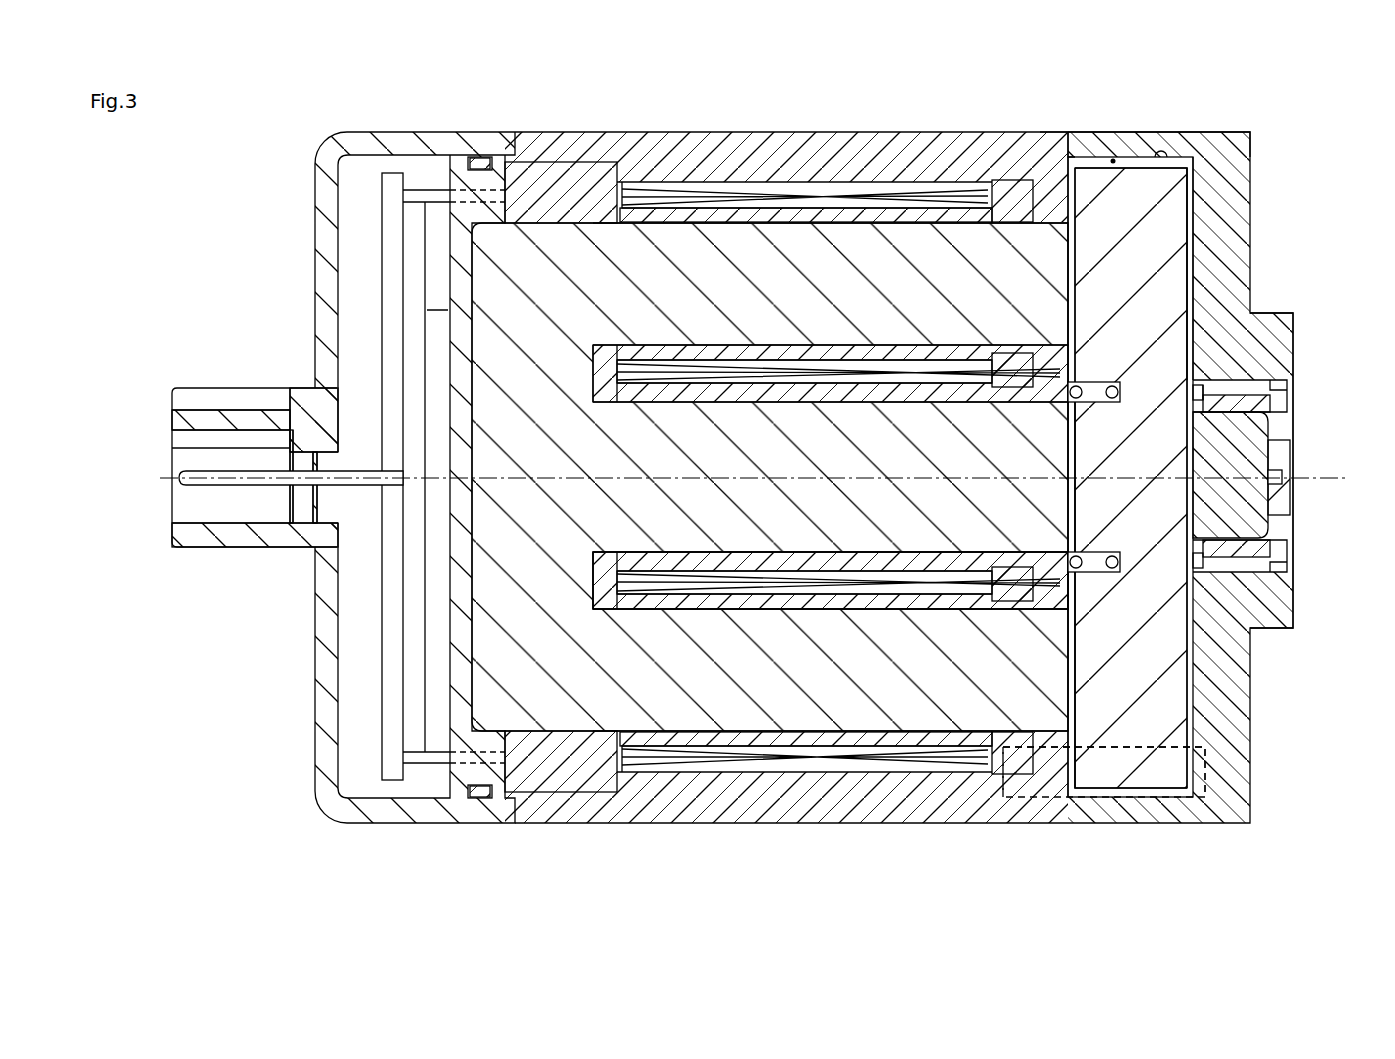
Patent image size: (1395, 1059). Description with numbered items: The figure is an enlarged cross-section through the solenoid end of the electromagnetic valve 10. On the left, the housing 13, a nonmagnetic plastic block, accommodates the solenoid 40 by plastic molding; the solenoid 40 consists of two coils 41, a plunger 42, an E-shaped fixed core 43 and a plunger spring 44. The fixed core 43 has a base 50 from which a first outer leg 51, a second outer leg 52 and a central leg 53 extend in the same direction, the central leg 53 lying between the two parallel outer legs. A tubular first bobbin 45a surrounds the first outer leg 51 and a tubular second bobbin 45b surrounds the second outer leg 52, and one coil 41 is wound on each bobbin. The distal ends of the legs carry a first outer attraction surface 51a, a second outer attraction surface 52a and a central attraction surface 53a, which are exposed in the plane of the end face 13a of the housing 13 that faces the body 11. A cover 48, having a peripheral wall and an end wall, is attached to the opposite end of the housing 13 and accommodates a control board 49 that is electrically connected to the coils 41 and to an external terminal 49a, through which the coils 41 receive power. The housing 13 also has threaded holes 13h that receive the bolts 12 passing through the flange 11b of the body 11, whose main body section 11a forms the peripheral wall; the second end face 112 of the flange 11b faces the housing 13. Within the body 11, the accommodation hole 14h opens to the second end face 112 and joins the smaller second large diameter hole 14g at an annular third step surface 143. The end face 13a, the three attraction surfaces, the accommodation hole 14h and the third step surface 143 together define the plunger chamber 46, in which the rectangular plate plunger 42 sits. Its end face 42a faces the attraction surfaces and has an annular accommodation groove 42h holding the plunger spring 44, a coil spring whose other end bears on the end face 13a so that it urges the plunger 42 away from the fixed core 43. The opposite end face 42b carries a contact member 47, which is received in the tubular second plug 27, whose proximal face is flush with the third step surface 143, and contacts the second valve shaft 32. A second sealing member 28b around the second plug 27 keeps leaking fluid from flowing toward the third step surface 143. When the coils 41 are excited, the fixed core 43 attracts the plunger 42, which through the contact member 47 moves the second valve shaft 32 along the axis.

The electromagnetic valve 10 is at (1304, 110).
The body 11 is at (1125, 152).
The main body section 11a is at (1270, 311).
The flange 11b is at (1215, 145).
The bolts 12 is at (1235, 715).
The housing 13 is at (833, 150).
The end face 13a is at (1085, 157).
The threaded holes 13h is at (1030, 797).
The second large diameter hole 14g is at (1215, 385).
The accommodation hole 14h is at (1162, 156).
The second plug 27 is at (1272, 410).
The second sealing member 28b is at (1265, 572).
The second valve shaft 32 is at (1278, 465).
The solenoid 40 is at (576, 158).
The coils 41 is at (752, 195).
The plunger 42 is at (1120, 770).
The end face 42a is at (1060, 253).
The end face 42b is at (1190, 216).
The accommodation groove 42h is at (1100, 383).
The fixed core 43 is at (857, 762).
The plunger spring 44 is at (1105, 575).
The first bobbin 45a is at (672, 210).
The second bobbin 45b is at (672, 750).
The plunger chamber 46 is at (1113, 158).
The contact member 47 is at (1252, 520).
The cover 48 is at (406, 138).
The control board 49 is at (386, 277).
The external terminal 49a is at (215, 486).
The base 50 is at (490, 625).
The first outer leg 51 is at (907, 232).
The first outer attraction surface 51a is at (1083, 275).
The second outer leg 52 is at (930, 718).
The second outer attraction surface 52a is at (1077, 680).
The central leg 53 is at (915, 540).
The central attraction surface 53a is at (1077, 440).
The second end face 112 is at (1050, 140).
The third step surface 143 is at (1195, 180).